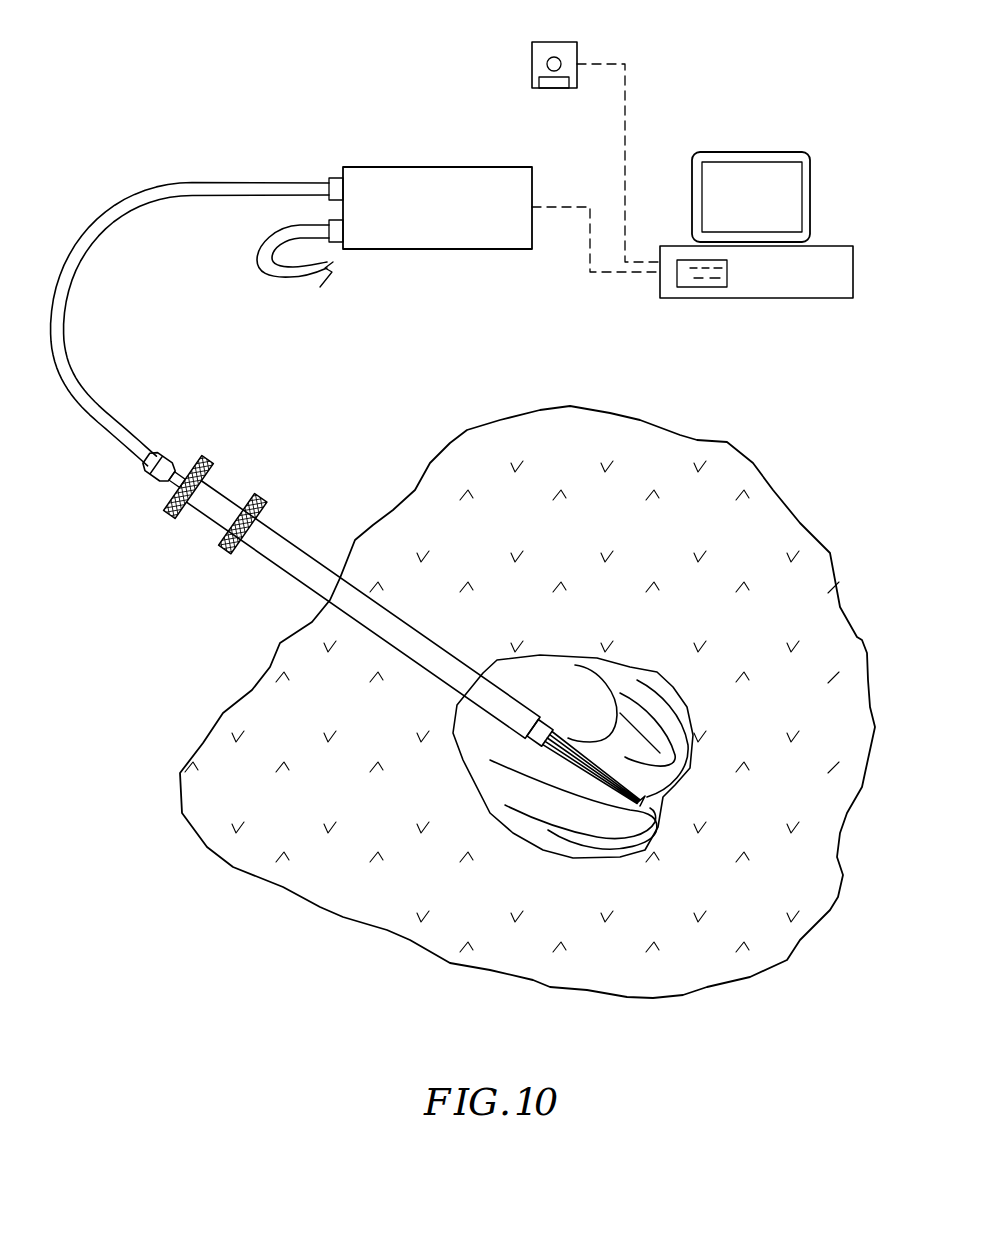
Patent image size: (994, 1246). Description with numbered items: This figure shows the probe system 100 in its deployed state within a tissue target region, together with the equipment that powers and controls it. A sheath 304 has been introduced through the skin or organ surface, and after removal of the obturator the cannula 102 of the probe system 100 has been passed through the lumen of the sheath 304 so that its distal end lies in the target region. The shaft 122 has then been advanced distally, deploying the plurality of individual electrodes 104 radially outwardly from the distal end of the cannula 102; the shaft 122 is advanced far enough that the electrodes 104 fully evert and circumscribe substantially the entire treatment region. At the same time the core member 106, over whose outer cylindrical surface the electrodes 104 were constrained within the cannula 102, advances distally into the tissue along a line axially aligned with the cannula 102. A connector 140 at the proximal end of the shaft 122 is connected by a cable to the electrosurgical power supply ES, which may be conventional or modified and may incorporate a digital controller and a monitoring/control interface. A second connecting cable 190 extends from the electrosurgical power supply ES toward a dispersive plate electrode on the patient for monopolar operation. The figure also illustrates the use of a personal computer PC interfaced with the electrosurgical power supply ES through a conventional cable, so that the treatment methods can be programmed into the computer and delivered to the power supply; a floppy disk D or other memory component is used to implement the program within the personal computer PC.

The probe system 100 is at (142, 526).
The cannula 102 is at (220, 502).
The electrodes 104 is at (613, 733).
The core member 106 is at (553, 763).
The shaft 122 is at (178, 474).
The connector 140 is at (167, 466).
The second connecting cable 190 is at (290, 272).
The sheath 304 is at (277, 552).
The electrosurgical power supply ES is at (430, 208).
The floppy disk D is at (545, 40).
The personal computer PC is at (778, 152).